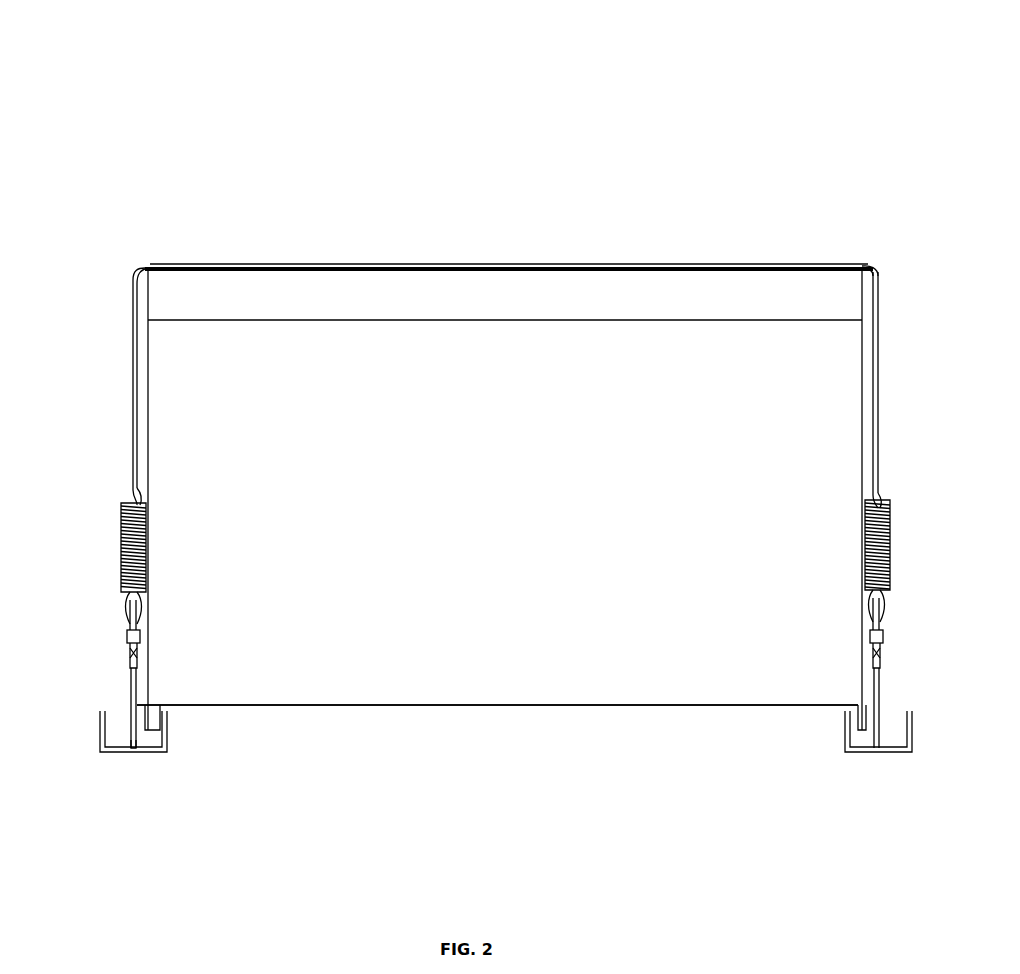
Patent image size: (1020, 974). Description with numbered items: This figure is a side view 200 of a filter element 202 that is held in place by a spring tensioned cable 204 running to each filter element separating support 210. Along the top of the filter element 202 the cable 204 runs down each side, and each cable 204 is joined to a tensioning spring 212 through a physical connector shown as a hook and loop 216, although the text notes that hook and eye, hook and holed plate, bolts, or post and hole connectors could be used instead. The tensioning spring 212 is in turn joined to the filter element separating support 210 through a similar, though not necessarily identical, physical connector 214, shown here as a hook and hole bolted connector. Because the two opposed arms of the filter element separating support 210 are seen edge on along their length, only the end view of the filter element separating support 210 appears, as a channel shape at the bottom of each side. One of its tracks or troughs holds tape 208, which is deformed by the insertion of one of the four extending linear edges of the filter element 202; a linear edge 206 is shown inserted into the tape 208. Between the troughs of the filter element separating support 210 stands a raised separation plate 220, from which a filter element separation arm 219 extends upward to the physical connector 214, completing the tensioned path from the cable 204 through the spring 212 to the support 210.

The side view 200 is at (676, 162).
The filter element 202 is at (497, 463).
The cable 204 is at (145, 263).
The linear edge 206 is at (160, 712).
The tape 208 is at (143, 752).
The filter element separating support 210 is at (118, 758).
The tensioning spring 212 is at (123, 502).
The physical connector 214 is at (120, 630).
The hook and loop 216 is at (130, 447).
The filter element separation arm 219 is at (128, 690).
The raised separation plate 220 is at (154, 704).